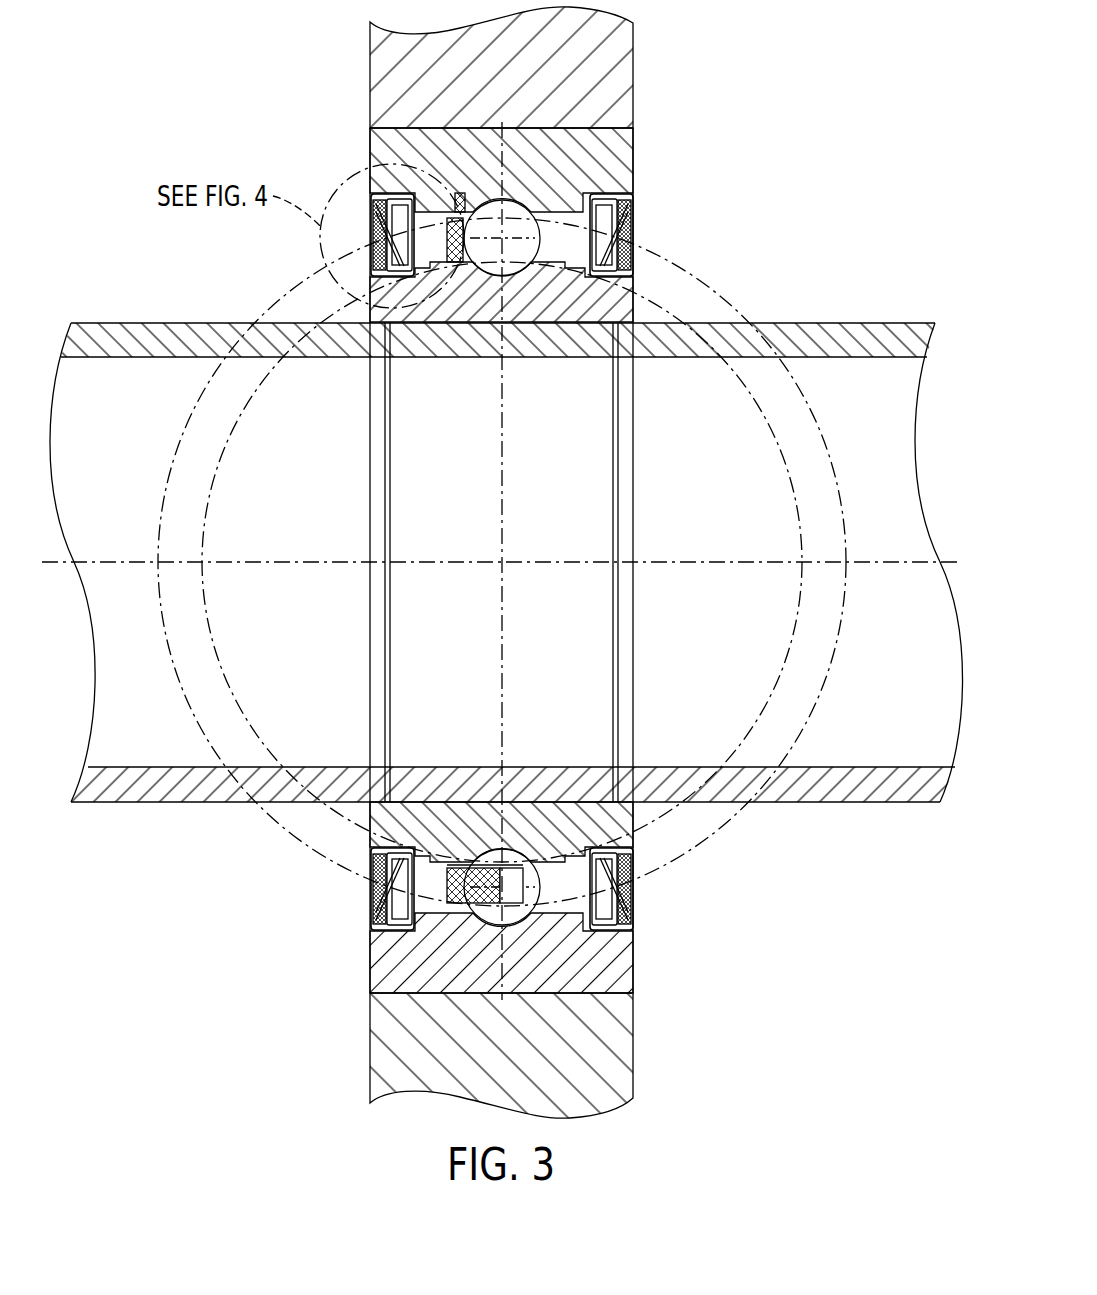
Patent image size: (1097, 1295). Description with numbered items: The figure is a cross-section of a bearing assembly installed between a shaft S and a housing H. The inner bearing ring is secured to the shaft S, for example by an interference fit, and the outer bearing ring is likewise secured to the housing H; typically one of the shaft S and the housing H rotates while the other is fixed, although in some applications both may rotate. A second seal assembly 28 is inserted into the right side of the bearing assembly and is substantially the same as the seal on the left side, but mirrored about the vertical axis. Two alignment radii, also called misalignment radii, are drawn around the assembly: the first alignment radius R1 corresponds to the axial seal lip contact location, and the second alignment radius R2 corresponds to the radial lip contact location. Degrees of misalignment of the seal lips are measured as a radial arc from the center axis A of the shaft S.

The housing H is at (620, 78).
The shaft S is at (118, 791).
The center axis A is at (98, 566).
The first alignment radius R1 is at (768, 337).
The second alignment radius R2 is at (788, 468).
The second seal assembly 28 is at (648, 206).